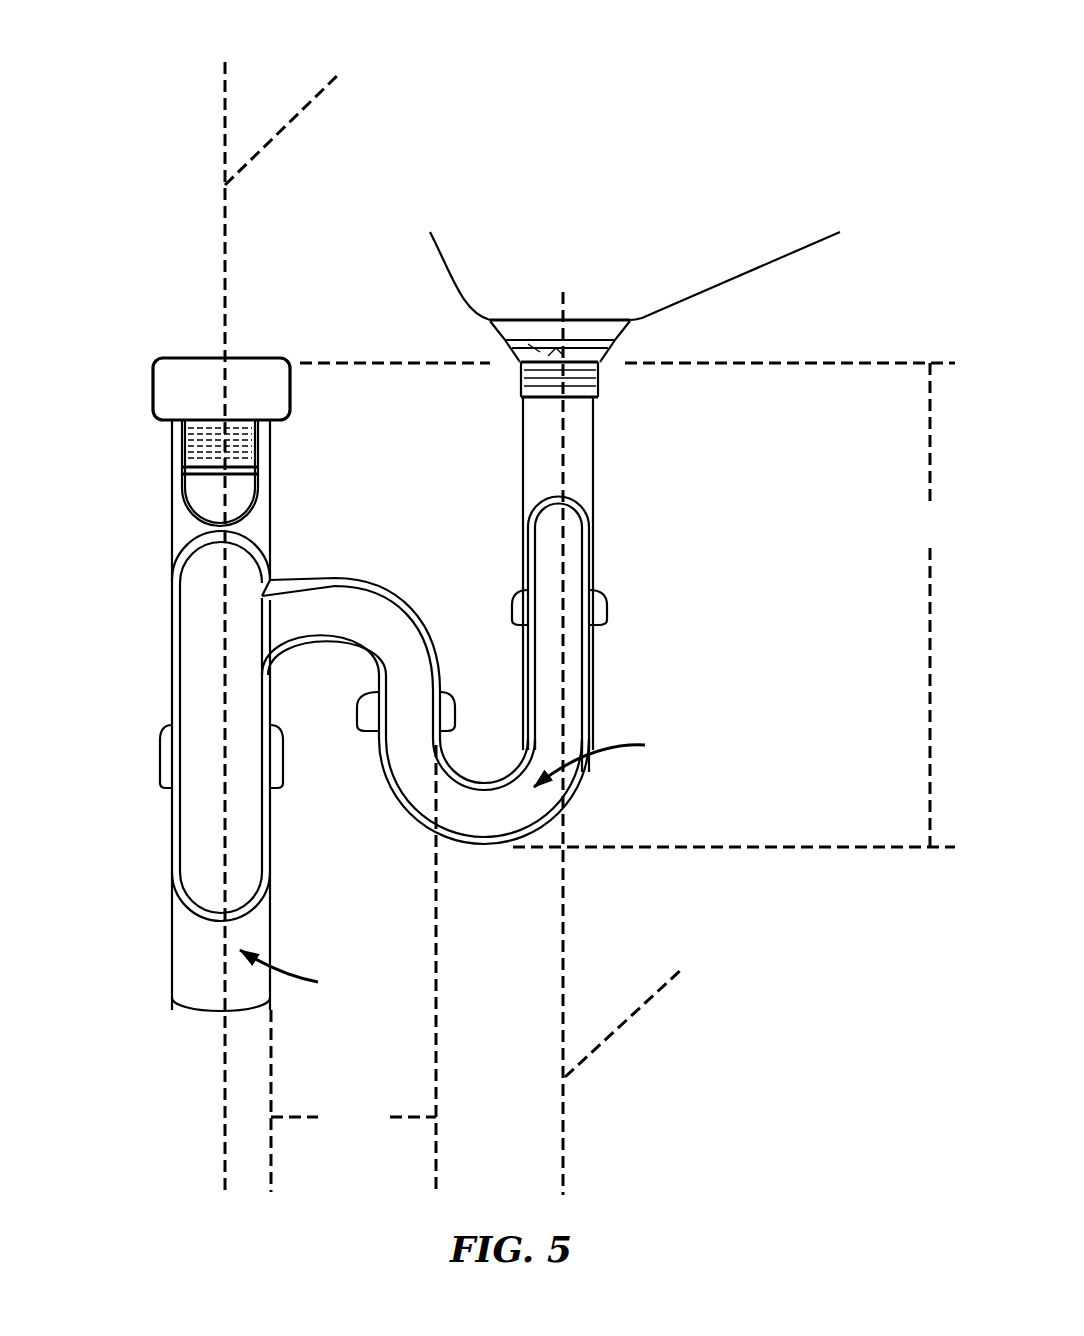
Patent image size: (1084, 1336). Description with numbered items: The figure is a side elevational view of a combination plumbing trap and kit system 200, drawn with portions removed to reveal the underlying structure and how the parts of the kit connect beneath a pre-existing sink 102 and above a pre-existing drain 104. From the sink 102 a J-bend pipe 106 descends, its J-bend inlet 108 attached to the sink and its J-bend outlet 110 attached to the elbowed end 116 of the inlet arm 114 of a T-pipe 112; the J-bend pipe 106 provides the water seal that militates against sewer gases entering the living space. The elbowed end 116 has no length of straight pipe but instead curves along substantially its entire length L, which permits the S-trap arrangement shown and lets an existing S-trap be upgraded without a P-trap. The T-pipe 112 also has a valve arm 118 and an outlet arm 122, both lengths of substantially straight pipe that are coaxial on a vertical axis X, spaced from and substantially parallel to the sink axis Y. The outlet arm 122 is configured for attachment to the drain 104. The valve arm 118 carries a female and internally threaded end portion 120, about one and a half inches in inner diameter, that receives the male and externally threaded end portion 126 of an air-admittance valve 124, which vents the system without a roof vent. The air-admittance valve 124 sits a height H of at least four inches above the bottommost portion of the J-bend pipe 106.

The drain assembly 200 is at (499, 599).
The sink 102 is at (682, 288).
The drain 104 is at (168, 1028).
The J-bend pipe 106 is at (622, 659).
The J-bend inlet 108 is at (616, 589).
The J-bend outlet 110 is at (355, 738).
The T-pipe 112 is at (282, 569).
The inlet arm 114 is at (300, 662).
The elbowed end 116 is at (442, 654).
The valve arm 118 is at (170, 518).
The female and internally threaded end portion 120 is at (262, 461).
The outlet arm 122 is at (170, 693).
The air-admittance valve 124 is at (224, 350).
The male and externally threaded end portion 126 is at (222, 444).